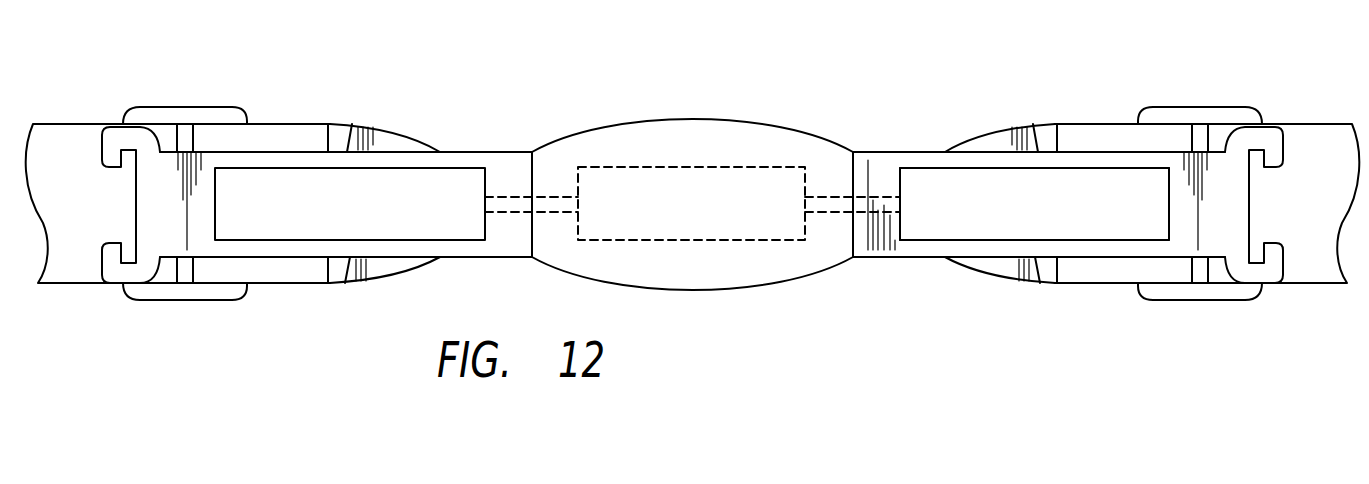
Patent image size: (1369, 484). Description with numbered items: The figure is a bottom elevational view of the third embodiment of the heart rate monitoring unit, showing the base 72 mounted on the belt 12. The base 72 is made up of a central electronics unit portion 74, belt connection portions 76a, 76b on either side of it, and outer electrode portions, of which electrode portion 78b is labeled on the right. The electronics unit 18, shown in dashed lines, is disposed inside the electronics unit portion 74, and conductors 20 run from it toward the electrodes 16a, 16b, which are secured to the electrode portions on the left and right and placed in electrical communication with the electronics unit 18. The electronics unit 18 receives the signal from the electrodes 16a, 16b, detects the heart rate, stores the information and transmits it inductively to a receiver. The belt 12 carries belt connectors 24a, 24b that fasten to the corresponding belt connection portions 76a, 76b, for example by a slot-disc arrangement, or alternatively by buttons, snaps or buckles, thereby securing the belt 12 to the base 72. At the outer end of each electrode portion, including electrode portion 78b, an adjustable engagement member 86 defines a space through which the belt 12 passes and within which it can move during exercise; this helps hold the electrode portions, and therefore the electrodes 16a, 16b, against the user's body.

The belt 12 is at (1325, 258).
The electrode 16a is at (253, 226).
The electrode 16b is at (935, 222).
The electronics unit 18 is at (685, 222).
The conductors 20 is at (516, 196).
The belt connector 24a is at (345, 258).
The belt connector 24b is at (1043, 264).
The base 72 is at (687, 328).
The electronics unit portion 74 is at (775, 262).
The belt connection portion 76a is at (378, 267).
The belt connection portion 76b is at (370, 245).
The electrode portion 78b is at (1101, 222).
The adjustable engagement member 86 is at (118, 258).